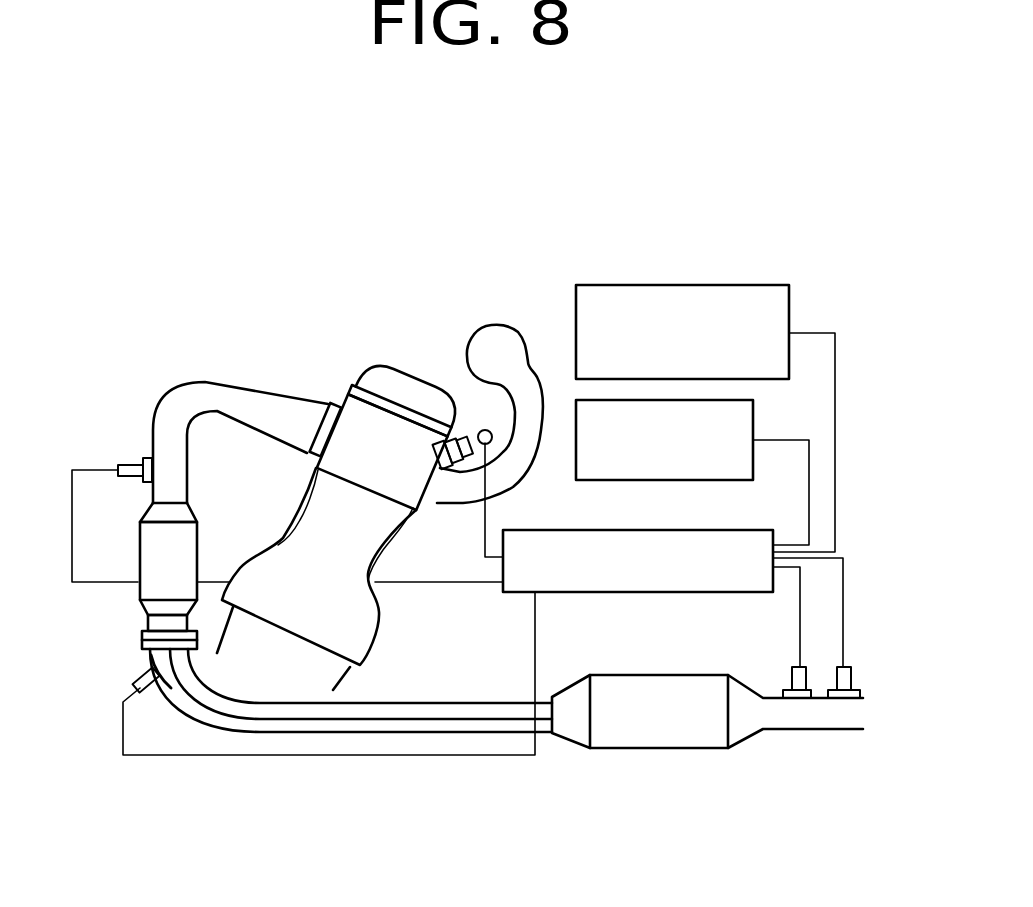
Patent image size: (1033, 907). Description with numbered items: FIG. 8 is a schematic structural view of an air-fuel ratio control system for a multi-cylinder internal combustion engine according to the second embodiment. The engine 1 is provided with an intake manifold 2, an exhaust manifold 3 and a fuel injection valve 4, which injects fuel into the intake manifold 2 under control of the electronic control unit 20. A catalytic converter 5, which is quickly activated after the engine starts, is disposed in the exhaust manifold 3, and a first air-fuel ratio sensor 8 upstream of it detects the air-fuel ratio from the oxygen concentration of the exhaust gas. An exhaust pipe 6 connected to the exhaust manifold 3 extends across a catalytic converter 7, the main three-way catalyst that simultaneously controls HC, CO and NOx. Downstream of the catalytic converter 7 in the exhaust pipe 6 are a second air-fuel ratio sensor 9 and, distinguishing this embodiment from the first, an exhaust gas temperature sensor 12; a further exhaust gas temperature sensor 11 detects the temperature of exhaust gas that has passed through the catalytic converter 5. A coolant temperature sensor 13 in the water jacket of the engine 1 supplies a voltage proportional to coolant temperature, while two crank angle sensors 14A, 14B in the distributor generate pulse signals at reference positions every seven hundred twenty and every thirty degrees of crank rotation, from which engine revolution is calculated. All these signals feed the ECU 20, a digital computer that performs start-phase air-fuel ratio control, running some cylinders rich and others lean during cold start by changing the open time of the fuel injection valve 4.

The engine 1 is at (340, 376).
The intake manifold 2 is at (543, 450).
The exhaust manifold 3 is at (262, 373).
The fuel injection valve 4 is at (470, 423).
The catalytic converter 5 is at (141, 596).
The exhaust pipe 6 is at (453, 701).
The catalytic converter 7 is at (662, 750).
The first air-fuel ratio sensor 8 is at (132, 462).
The second air-fuel ratio sensor 9 is at (790, 680).
The exhaust gas temperature sensor 11 is at (143, 663).
The exhaust gas temperature sensor 12 is at (852, 668).
The coolant temperature sensor 13 is at (790, 300).
The crank angle sensor 14A is at (667, 463).
The crank angle sensor 14B is at (603, 482).
The electronic control unit (ECU) 20 is at (640, 592).